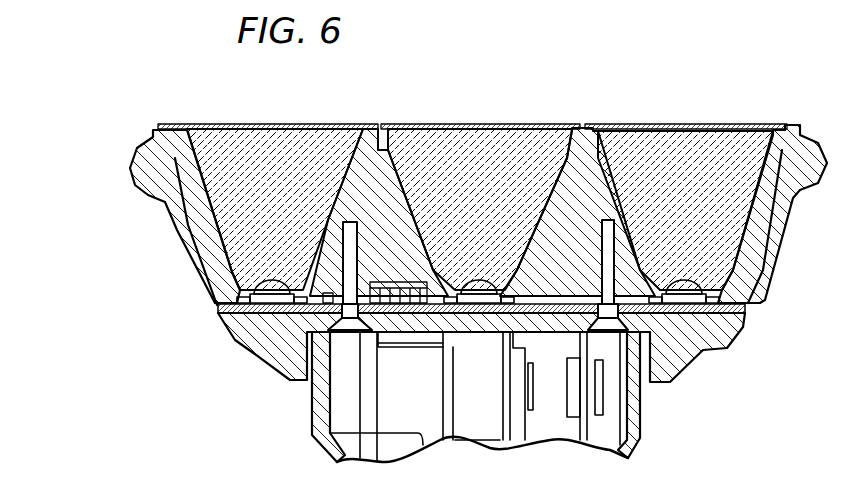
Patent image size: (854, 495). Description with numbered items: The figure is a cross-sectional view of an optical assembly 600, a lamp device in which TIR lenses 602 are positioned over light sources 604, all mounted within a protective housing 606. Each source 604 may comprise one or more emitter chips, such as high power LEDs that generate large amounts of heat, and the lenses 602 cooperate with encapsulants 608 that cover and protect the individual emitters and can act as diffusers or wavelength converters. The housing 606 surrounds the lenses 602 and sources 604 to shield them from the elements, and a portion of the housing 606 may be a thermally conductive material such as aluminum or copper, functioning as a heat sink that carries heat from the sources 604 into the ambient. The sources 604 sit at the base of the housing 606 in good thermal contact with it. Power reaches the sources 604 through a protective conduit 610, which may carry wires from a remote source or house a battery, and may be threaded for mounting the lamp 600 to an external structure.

The optical assembly 600 is at (155, 341).
The TIR lens 602 is at (242, 124).
The light source 604 is at (467, 303).
The protective housing 606 is at (177, 252).
The encapsulant 608 is at (270, 283).
The protective conduit 610 is at (647, 420).